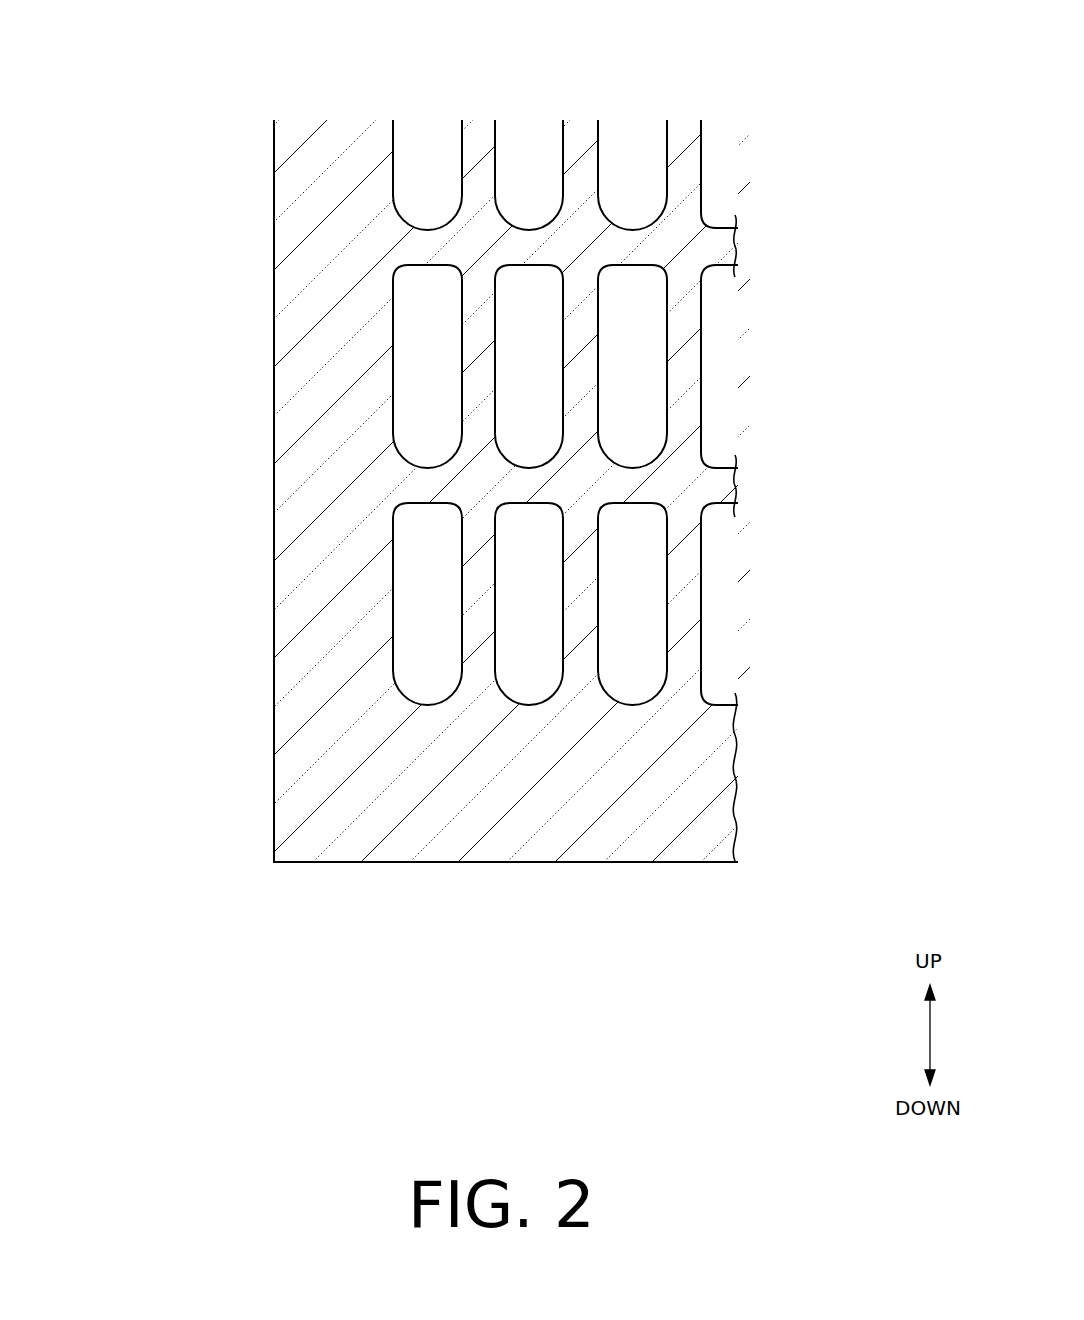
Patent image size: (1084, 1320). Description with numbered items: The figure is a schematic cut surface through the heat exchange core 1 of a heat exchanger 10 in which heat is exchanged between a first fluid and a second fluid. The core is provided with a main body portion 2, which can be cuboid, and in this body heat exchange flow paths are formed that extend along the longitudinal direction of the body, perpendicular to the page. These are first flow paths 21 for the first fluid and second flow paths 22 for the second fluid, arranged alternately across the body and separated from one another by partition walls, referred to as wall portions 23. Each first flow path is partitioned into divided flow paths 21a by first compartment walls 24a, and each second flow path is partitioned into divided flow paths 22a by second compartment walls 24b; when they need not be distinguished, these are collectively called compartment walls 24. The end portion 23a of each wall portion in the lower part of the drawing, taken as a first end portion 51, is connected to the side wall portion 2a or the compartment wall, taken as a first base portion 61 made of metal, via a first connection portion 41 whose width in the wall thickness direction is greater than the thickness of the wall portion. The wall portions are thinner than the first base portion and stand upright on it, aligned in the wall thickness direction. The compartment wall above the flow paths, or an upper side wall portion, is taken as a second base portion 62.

The heat exchange core 1 is at (542, 527).
The heat exchanger 10 is at (229, 130).
The main body portion 2 is at (274, 369).
The side wall portion 2a is at (320, 443).
The first flow paths 21 is at (530, 394).
The divided flow paths 21a is at (455, 153).
The second flow paths 22 is at (630, 392).
The divided flow paths 22a is at (501, 133).
The wall portions 23 is at (680, 135).
The end portion 23a is at (703, 422).
The compartment walls 24 is at (492, 378).
The first compartment walls 24a is at (491, 377).
The second compartment walls 24b is at (492, 383).
The first connection portion 41 is at (640, 215).
The first end portion 51 is at (683, 203).
The first base portion 61 is at (427, 240).
The second base portion 62 is at (527, 243).